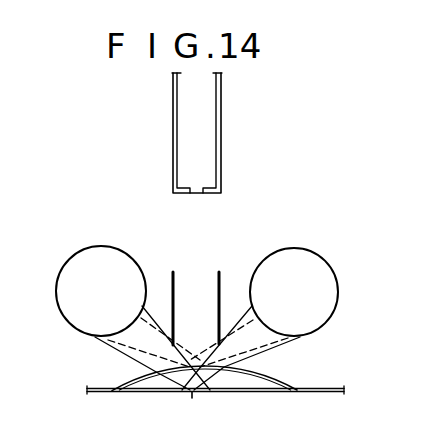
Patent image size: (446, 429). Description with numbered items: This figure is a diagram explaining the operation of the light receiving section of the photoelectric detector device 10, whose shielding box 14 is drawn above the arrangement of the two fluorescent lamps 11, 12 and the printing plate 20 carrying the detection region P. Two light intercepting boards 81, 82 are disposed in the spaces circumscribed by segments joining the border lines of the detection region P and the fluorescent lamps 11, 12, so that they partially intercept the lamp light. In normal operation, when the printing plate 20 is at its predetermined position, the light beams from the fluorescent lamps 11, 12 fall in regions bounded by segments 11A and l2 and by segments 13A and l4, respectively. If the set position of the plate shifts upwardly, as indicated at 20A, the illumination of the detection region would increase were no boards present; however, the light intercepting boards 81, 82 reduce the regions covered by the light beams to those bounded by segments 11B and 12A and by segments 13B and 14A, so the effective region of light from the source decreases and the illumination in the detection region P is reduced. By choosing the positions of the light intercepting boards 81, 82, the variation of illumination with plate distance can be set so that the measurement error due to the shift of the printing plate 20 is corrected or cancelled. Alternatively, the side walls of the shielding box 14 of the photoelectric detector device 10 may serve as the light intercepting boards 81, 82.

The photoelectric detector device 10 is at (140, 163).
The shielding box 14 is at (222, 123).
The fluorescent lamp 11 is at (73, 256).
The fluorescent lamp 12 is at (313, 256).
The light intercepting board 81 is at (171, 272).
The light intercepting board 82 is at (221, 272).
The printing plate 20 is at (315, 391).
The printing plate in shifted position 20A is at (250, 372).
The detection region P is at (190, 406).
The segment l1A 11A is at (155, 313).
The segment l1B 11B is at (188, 352).
The segment l2 is at (103, 344).
The segment l2A 12A is at (128, 348).
The segment l3A 13A is at (247, 312).
The segment l3B 13B is at (252, 323).
The segment l4 is at (295, 343).
The segment l4A 14A is at (272, 345).